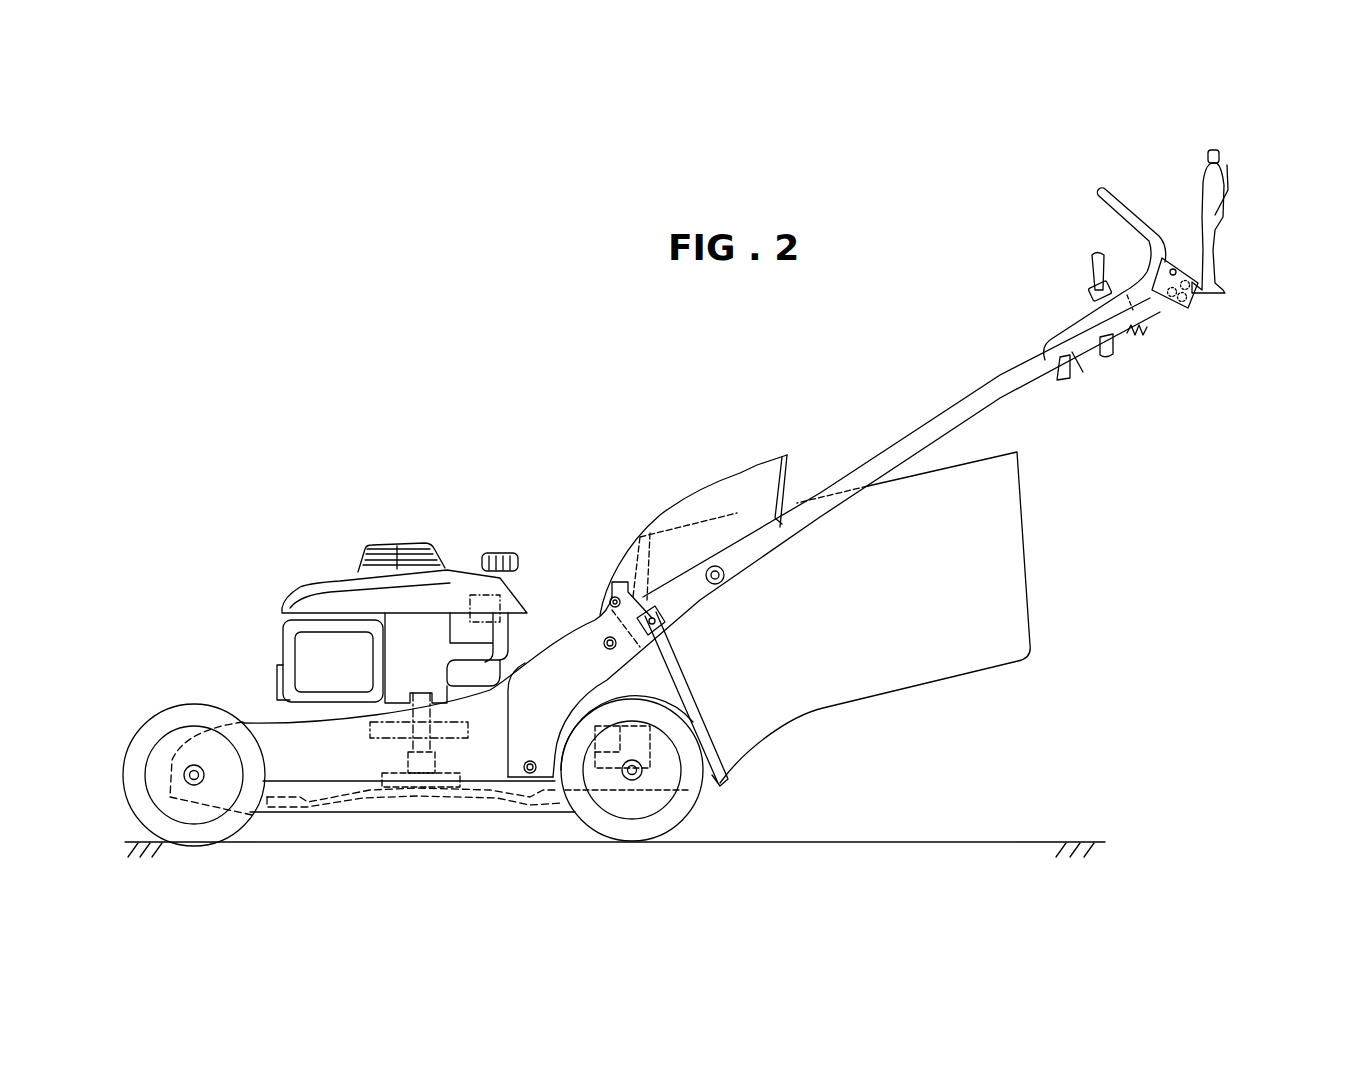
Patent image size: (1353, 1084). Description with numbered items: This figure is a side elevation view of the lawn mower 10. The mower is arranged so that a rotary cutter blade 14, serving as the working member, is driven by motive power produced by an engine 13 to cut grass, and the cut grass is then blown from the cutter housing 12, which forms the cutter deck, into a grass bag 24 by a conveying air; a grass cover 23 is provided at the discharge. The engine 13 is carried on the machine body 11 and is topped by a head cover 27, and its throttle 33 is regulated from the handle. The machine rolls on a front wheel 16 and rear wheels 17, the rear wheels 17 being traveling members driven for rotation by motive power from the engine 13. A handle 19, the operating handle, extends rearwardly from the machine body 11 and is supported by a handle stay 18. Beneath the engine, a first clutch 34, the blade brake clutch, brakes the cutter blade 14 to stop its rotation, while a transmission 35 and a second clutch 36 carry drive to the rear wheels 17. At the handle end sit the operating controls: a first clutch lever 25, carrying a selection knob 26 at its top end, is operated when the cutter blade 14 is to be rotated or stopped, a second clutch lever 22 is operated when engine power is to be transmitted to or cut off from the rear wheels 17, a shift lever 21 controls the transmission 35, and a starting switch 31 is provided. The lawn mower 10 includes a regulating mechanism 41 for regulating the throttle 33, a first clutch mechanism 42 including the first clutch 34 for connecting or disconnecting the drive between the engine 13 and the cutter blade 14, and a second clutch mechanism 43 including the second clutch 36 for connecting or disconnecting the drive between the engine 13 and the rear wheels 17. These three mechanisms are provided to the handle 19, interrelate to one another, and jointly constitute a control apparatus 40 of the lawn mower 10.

The lawn mower 10 is at (620, 423).
The machine body 11 is at (398, 702).
The cutter housing 12 is at (263, 720).
The engine 13 is at (282, 647).
The rotary cutter blade 14 is at (328, 797).
The front wheel 16 is at (180, 702).
The rear wheels 17 is at (665, 707).
The handle stay 18 is at (558, 660).
The handle 19 is at (920, 428).
The shift lever 21 is at (1092, 263).
The second clutch lever 22 is at (1233, 170).
The grass cover 23 is at (685, 495).
The grass bag 24 is at (797, 500).
The first clutch lever 25 is at (1190, 187).
The selection knob 26 is at (1215, 145).
The head cover 27 is at (326, 580).
The starting switch 31 is at (1085, 296).
The throttle 33 is at (488, 598).
The first clutch 34 is at (380, 720).
The transmission 35 is at (615, 772).
The second clutch 36 is at (607, 775).
The control apparatus 40 is at (1238, 303).
The regulating mechanism 41 is at (1190, 318).
The first clutch mechanism 42 is at (1188, 150).
The second clutch mechanism 43 is at (1230, 152).